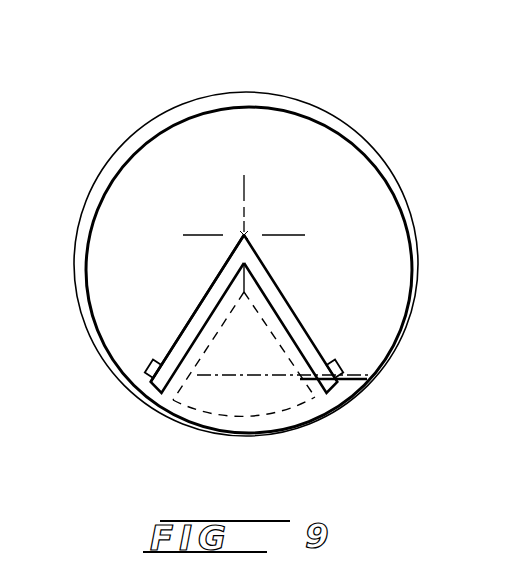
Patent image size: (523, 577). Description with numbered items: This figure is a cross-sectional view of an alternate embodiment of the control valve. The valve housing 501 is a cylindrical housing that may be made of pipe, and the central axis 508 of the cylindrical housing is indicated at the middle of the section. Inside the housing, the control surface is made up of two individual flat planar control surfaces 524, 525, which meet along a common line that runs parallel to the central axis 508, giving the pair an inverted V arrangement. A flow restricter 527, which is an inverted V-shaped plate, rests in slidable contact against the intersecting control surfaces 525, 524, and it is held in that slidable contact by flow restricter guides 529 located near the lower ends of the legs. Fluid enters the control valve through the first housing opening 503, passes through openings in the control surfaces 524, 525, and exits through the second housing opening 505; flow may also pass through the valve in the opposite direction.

The valve housing 501 is at (325, 112).
The first housing opening 503 is at (168, 186).
The second housing opening 505 is at (233, 395).
The central axis 508 is at (295, 235).
The control surface 524 is at (263, 283).
The control surface 525 is at (213, 302).
The flow restricter 527 is at (183, 328).
The flow restricter guides 529 is at (145, 365).